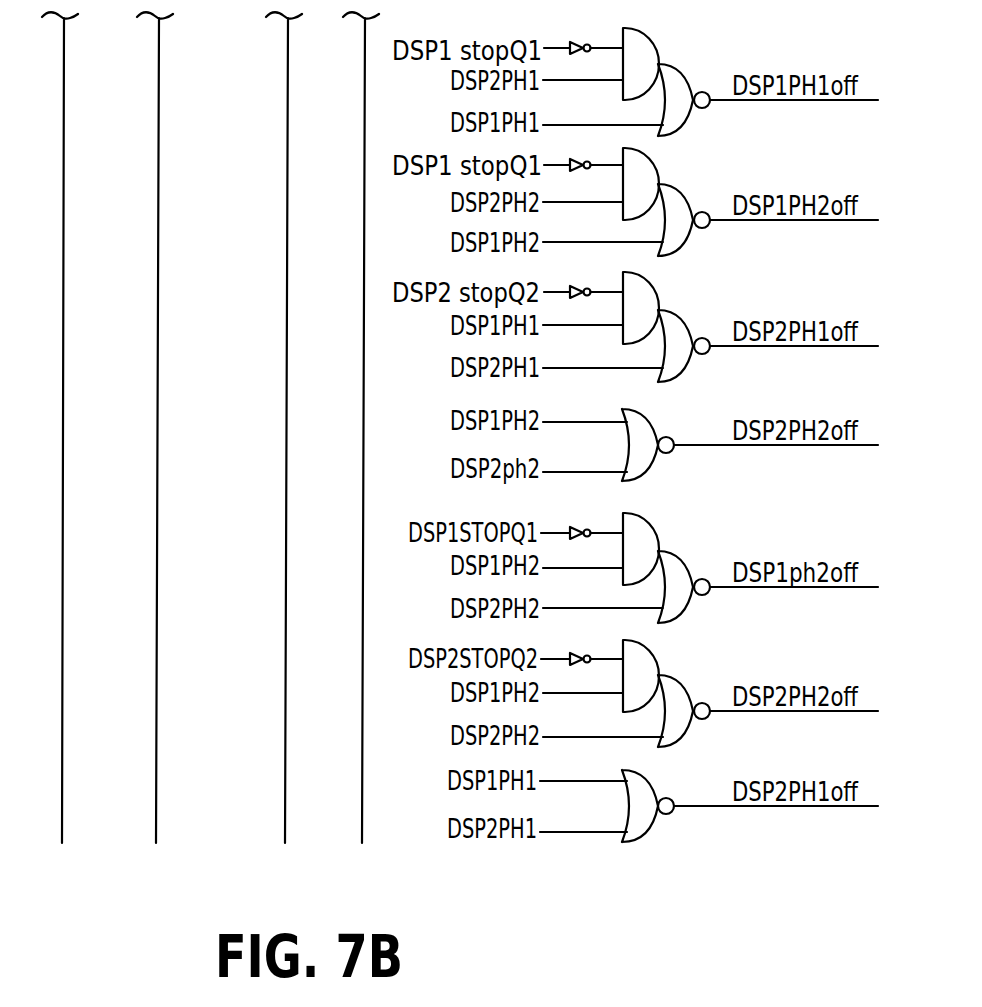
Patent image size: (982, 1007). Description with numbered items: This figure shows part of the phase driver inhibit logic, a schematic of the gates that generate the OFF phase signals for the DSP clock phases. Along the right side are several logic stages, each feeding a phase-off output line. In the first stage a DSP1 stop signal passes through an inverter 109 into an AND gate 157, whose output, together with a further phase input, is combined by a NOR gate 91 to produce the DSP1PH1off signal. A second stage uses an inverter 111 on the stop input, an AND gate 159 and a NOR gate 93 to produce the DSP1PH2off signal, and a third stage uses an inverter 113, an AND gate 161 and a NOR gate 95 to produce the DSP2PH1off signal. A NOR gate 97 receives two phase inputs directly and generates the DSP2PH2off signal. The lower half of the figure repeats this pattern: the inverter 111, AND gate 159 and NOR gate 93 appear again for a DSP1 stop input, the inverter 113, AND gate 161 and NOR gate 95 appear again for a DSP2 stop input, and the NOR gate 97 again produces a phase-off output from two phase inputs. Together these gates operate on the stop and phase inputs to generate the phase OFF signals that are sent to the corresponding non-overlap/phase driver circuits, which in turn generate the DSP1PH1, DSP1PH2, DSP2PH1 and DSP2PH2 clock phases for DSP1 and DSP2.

The inverter 109 is at (579, 42).
The inverter 111 is at (590, 150).
The inverter 113 is at (579, 286).
The AND gate 157 is at (659, 47).
The AND gate 159 is at (659, 168).
The AND gate 161 is at (659, 292).
The NOR gate 91 is at (683, 127).
The NOR gate 93 is at (685, 246).
The NOR gate 95 is at (685, 373).
The NOR gate 97 is at (650, 470).